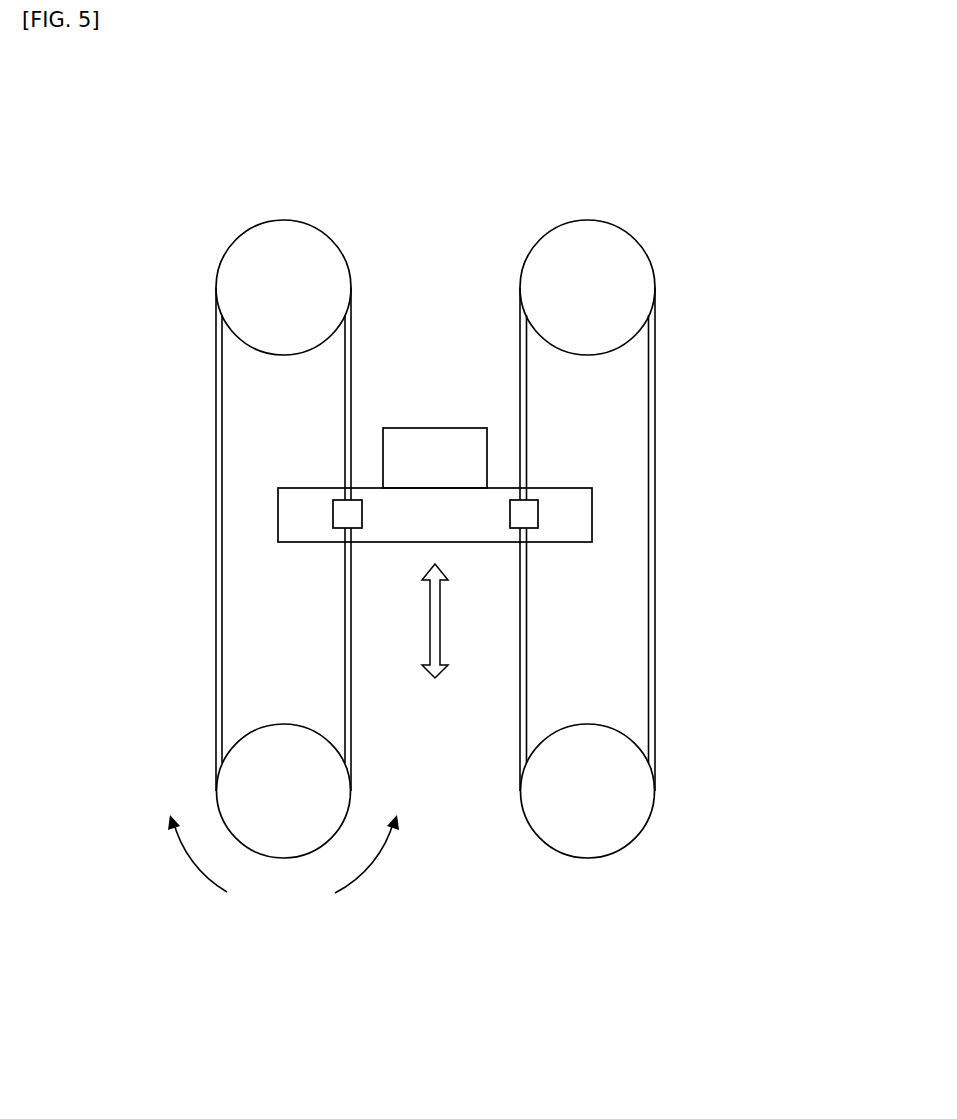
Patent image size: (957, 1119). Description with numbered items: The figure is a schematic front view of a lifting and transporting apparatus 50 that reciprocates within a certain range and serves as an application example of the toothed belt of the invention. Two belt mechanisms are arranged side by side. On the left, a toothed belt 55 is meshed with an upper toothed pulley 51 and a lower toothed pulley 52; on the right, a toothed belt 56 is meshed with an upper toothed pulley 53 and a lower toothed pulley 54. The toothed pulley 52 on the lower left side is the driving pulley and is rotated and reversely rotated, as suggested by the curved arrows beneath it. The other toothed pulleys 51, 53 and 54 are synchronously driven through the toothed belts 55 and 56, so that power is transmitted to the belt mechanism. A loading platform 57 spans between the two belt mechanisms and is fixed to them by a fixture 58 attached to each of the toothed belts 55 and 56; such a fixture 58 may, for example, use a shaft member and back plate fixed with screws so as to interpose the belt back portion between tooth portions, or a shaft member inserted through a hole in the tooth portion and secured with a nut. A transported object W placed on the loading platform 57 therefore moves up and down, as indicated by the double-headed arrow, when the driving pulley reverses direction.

The lifting and transporting apparatus 50 is at (747, 145).
The toothed pulley 51 is at (242, 235).
The toothed pulley 52 is at (278, 858).
The toothed pulley 53 is at (623, 232).
The toothed pulley 54 is at (625, 847).
The toothed belt 55 is at (211, 598).
The toothed belt 56 is at (656, 598).
The loading platform 57 is at (557, 488).
The fixture 58 is at (333, 513).
The transported object W is at (445, 428).